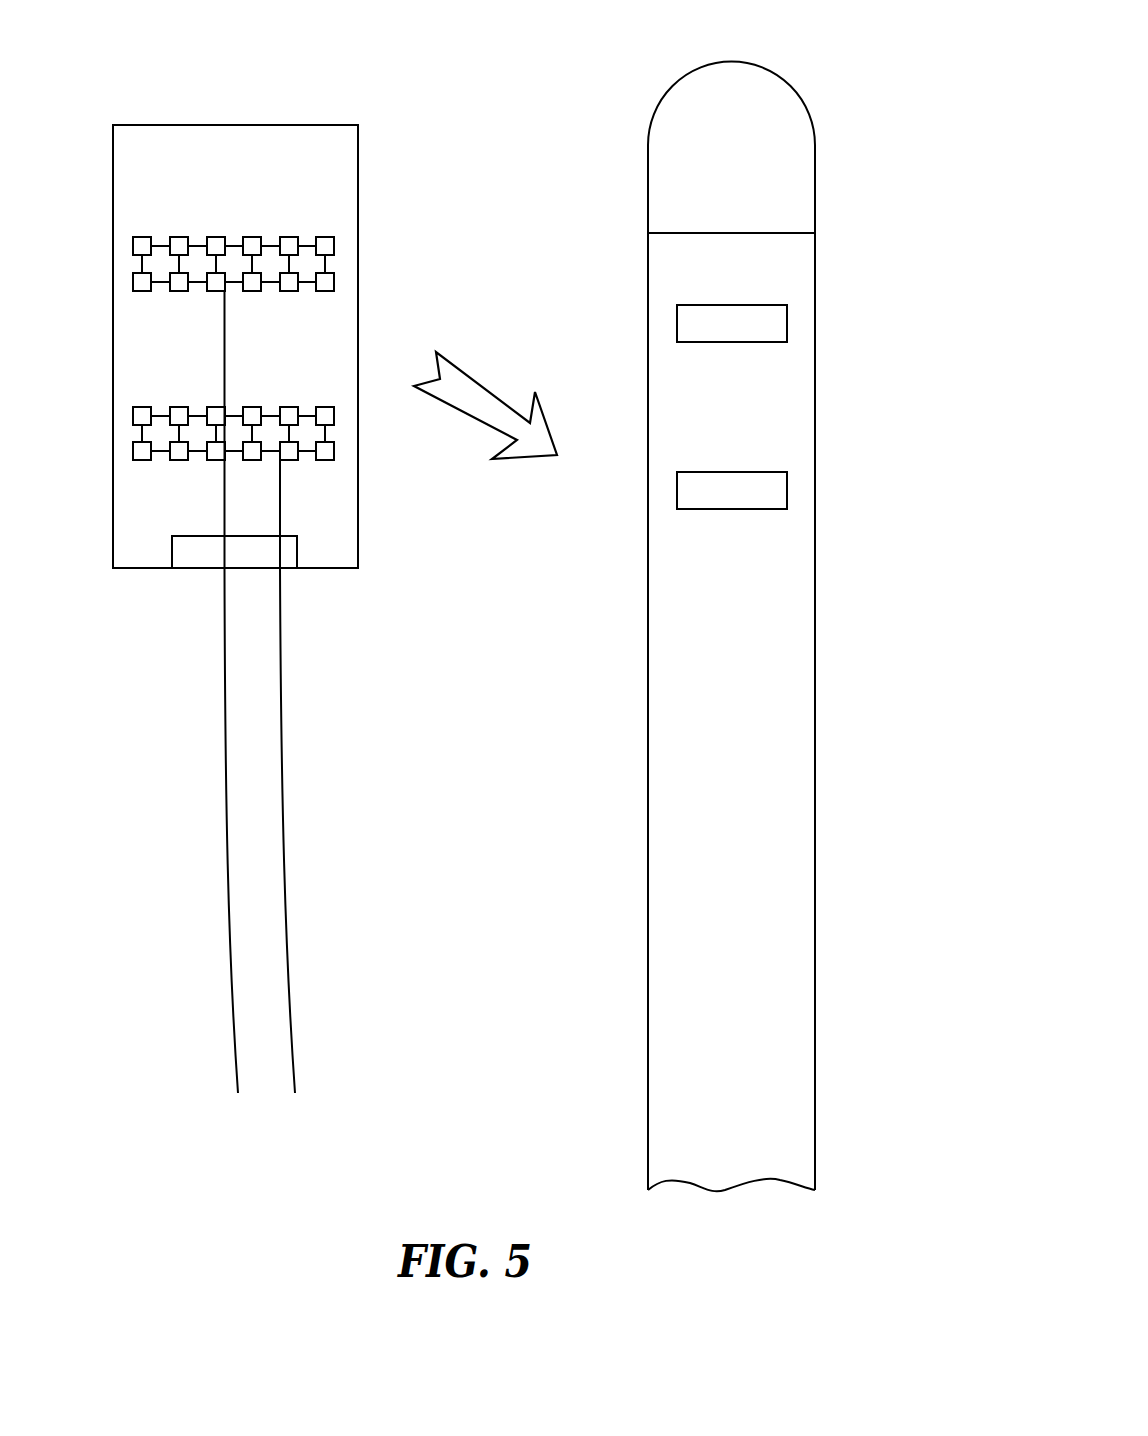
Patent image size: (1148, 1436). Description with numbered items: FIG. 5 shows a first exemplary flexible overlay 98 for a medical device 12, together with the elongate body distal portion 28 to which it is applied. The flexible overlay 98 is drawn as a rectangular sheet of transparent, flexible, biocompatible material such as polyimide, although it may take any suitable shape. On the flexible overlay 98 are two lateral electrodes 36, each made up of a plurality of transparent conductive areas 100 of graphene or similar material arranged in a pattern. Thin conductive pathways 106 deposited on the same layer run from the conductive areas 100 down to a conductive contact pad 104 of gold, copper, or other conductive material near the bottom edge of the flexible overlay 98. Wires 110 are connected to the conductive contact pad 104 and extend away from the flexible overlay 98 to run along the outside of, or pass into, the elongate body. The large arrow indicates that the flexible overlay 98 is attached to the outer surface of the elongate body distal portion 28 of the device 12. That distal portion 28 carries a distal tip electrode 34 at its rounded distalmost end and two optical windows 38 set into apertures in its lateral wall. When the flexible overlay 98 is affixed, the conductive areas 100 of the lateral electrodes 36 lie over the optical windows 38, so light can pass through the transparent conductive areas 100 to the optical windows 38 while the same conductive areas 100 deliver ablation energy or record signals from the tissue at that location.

The flexible overlay 98 is at (176, 120).
The lateral electrode 36 is at (284, 308).
The conductive area 100 is at (334, 281).
The conductive pathway 106 is at (225, 323).
The conductive contact pad 104 is at (297, 549).
The wire 110 is at (285, 716).
The device 12 is at (739, 609).
The distal tip electrode 34 is at (700, 65).
The optical window 38 is at (692, 325).
The elongate body distal portion 28 is at (647, 617).